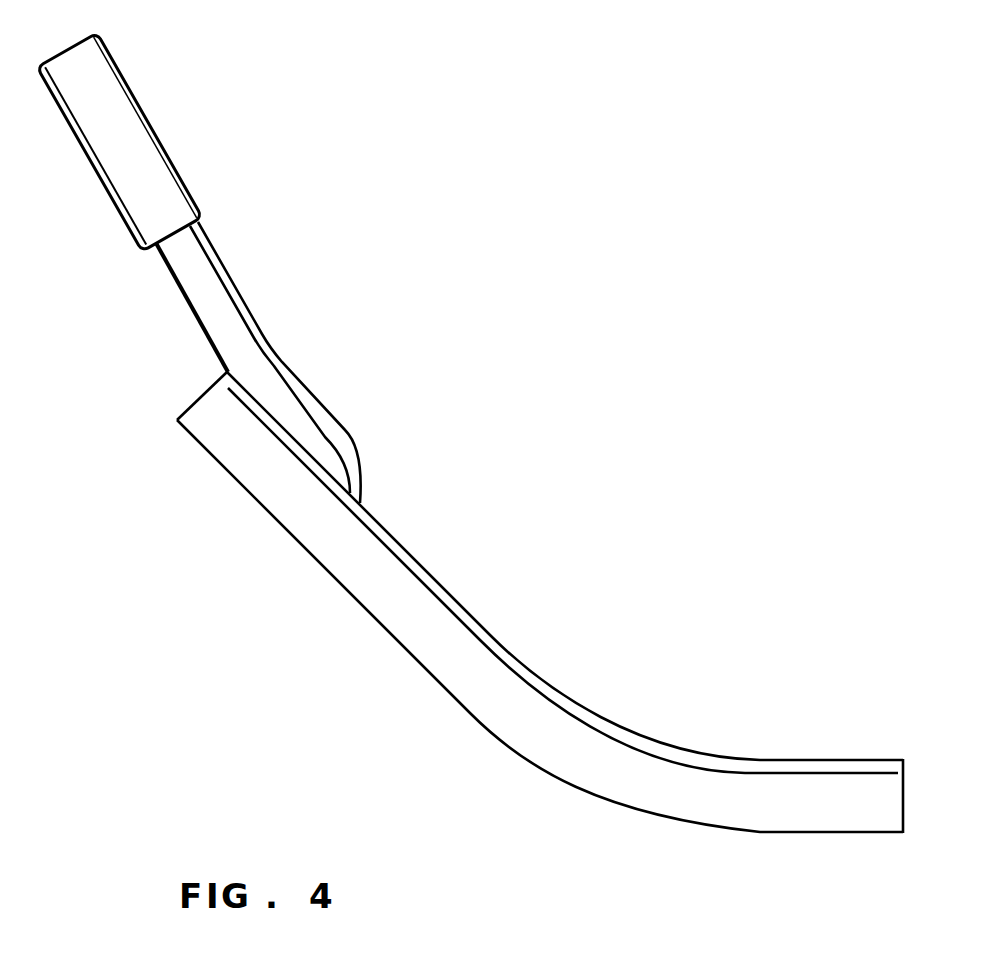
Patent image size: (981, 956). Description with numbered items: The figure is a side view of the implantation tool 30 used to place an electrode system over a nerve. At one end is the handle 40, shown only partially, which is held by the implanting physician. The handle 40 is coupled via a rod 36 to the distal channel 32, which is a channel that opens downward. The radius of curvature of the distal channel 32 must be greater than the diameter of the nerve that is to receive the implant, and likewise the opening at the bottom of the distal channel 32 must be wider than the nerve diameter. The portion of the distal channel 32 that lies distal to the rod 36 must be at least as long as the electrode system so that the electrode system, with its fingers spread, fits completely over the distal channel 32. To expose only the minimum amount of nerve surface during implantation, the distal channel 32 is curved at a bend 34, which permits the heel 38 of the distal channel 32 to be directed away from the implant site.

The implantation tool 30 is at (712, 216).
The distal channel 32 is at (587, 748).
The bend 34 is at (833, 817).
The rod 36 is at (330, 442).
The heel 38 is at (217, 402).
The handle 40 is at (145, 150).